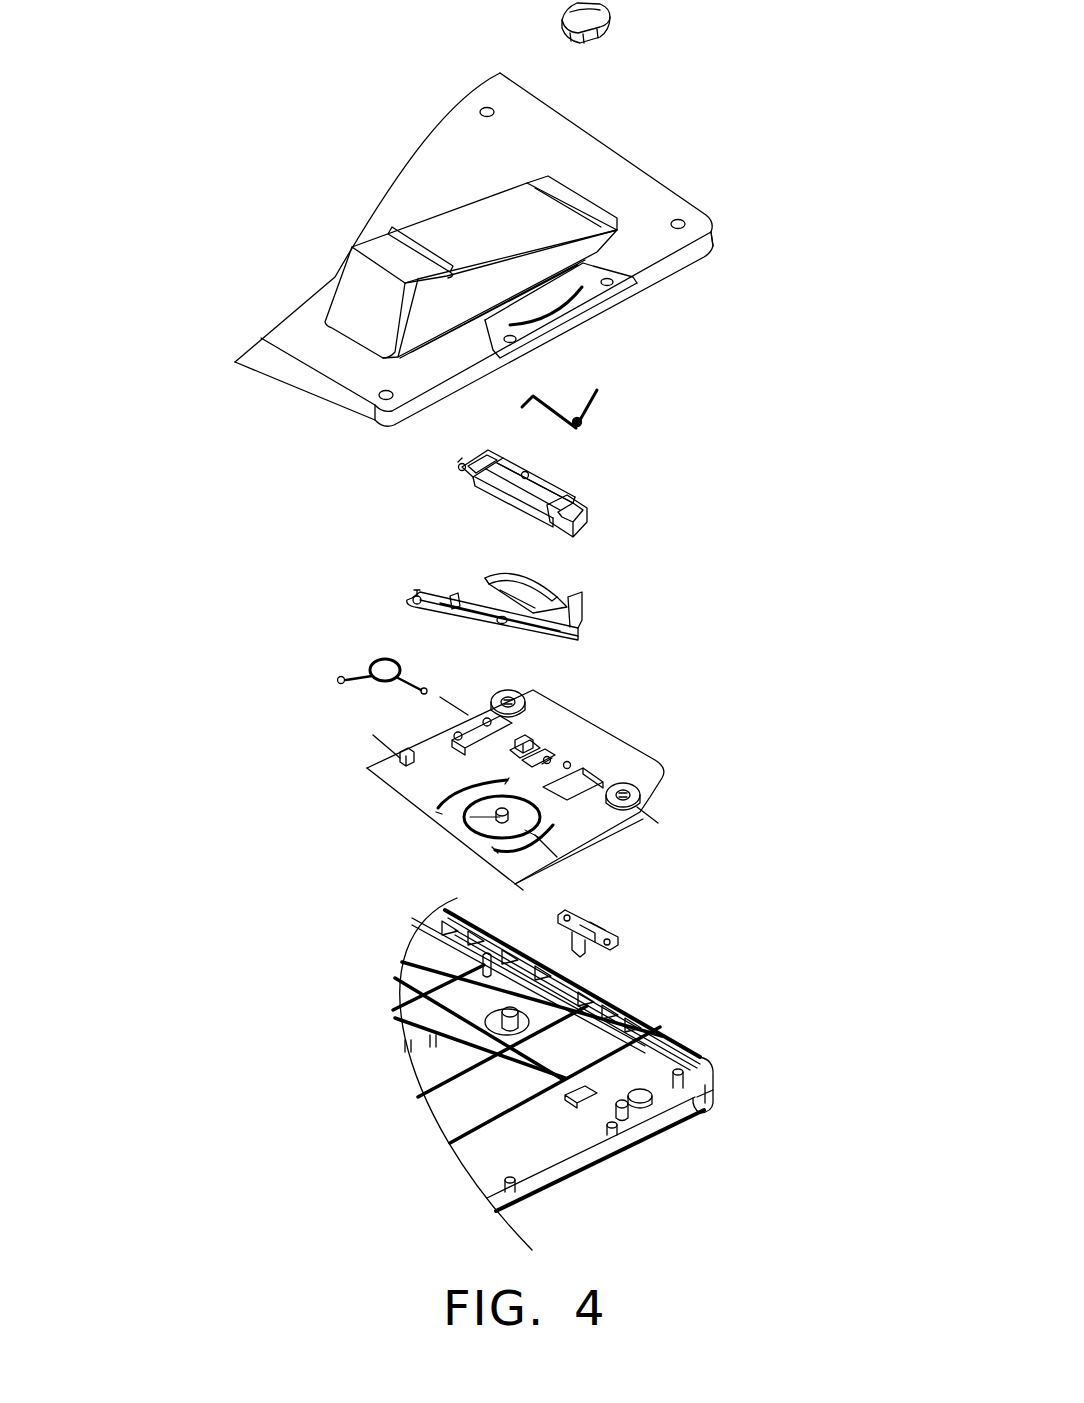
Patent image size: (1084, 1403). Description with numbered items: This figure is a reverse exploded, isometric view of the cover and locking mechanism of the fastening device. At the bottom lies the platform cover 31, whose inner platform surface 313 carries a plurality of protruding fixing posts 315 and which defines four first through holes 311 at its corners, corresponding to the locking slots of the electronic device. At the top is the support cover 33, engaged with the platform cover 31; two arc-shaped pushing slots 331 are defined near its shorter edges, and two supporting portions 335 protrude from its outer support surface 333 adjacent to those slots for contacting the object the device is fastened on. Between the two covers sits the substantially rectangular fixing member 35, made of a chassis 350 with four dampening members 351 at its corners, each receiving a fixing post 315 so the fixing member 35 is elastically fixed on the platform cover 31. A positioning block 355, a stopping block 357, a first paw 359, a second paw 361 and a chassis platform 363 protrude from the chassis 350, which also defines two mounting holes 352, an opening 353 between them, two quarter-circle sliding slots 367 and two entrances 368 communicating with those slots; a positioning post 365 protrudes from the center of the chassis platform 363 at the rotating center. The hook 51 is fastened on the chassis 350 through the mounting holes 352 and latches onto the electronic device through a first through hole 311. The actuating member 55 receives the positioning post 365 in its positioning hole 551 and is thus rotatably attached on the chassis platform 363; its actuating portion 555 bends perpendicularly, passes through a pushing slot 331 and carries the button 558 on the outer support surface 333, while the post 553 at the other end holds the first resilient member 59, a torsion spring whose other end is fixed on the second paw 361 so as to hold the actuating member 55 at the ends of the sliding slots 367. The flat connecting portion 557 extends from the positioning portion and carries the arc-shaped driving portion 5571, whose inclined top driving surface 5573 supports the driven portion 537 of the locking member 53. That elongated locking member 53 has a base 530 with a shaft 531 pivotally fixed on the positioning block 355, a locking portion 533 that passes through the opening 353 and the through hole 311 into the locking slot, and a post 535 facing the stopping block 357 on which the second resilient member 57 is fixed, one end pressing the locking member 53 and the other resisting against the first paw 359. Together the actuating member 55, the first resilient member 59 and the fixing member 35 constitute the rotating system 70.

The platform cover 31 is at (420, 1110).
The first through holes 311 is at (590, 1103).
The inner platform surface 313 is at (640, 1062).
The fixing posts 315 is at (485, 1018).
The support cover 33 is at (386, 136).
The pushing slots 331 is at (582, 295).
The outer support surface 333 is at (608, 178).
The supporting portions 335 is at (370, 246).
The fixing member 35 is at (346, 723).
The chassis 350 is at (630, 768).
The dampening members 351 is at (643, 797).
The mounting holes 352 is at (567, 763).
The opening 353 is at (585, 803).
The positioning block 355 is at (508, 697).
The stopping block 357 is at (523, 742).
The first paw 359 is at (549, 758).
The second paw 361 is at (408, 765).
The chassis platform 363 is at (487, 830).
The positioning post 365 is at (498, 818).
The sliding slots 367 is at (437, 803).
The entrances 368 is at (497, 852).
The hook 51 is at (610, 921).
The locking member 53 is at (598, 505).
The base 530 is at (553, 495).
The shaft 531 is at (460, 470).
The locking portion 533 is at (583, 533).
The post 535 is at (527, 470).
The driven portion 537 is at (540, 505).
The actuating member 55 is at (433, 573).
The positioning hole 551 is at (502, 624).
The post 553 is at (415, 598).
The actuating portion 555 is at (580, 620).
The connecting portion 557 is at (550, 590).
The driving portion 5571 is at (527, 600).
The driving surface 5573 is at (497, 578).
The button 558 is at (613, 13).
The second resilient member 57 is at (598, 393).
The first resilient member 59 is at (370, 663).
The rotating system 70 is at (238, 520).